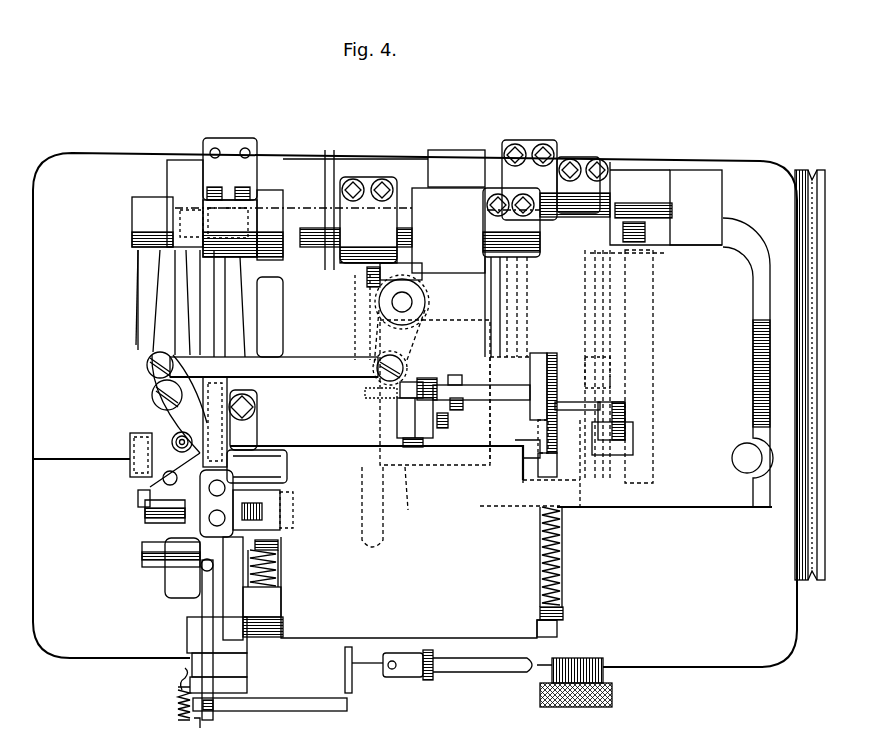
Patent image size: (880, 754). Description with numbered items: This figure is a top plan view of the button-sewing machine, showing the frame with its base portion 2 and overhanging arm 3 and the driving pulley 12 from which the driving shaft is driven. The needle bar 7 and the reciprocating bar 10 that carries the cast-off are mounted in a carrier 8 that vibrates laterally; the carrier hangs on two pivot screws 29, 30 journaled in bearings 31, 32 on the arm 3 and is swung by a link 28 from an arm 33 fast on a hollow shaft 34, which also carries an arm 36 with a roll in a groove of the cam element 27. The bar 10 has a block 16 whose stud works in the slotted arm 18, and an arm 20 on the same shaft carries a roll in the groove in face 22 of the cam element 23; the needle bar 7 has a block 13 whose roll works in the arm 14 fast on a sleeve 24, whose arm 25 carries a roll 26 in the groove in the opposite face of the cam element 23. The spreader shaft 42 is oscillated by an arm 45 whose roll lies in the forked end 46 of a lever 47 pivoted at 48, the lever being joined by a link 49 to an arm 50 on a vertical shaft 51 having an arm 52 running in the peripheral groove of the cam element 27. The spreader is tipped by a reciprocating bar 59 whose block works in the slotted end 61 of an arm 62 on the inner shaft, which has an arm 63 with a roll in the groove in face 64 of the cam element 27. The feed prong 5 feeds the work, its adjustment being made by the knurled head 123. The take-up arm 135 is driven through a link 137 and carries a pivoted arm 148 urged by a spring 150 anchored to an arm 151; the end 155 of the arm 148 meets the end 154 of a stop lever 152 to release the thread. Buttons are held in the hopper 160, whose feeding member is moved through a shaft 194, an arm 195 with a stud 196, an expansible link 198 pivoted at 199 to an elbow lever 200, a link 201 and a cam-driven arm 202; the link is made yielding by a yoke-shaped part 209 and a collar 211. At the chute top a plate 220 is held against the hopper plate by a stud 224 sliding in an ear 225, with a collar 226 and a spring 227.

The base portion 2 is at (722, 660).
The overhanging head or arm 3 is at (305, 272).
The feed prong 5 is at (117, 735).
The needle bar 7 is at (226, 489).
The carrier 8 is at (142, 470).
The reciprocating bar 10 is at (180, 532).
The driving pulley 12 is at (793, 536).
The block 13 is at (260, 465).
The arm 14 is at (245, 300).
The block 16 is at (233, 530).
The arm 18 is at (193, 299).
The arm 20 is at (630, 253).
The cam face 22 is at (583, 470).
The cam element 23 is at (580, 507).
The sleeve 24 is at (362, 175).
The arm 25 is at (515, 258).
The roll 26 is at (520, 360).
The cam element 27 is at (397, 507).
The link 28 is at (215, 277).
The pivot screw 29 is at (167, 502).
The pivot screw 30 is at (285, 503).
The bearing 31 is at (163, 523).
The bearing 32 is at (280, 521).
The arm 33 is at (218, 222).
The hollow shaft 34 is at (405, 207).
The arm 36 is at (360, 297).
The vertically-reciprocating shaft 42 is at (165, 481).
The arm 45 is at (213, 452).
The forked end 46 is at (167, 432).
The lever 47 is at (153, 385).
The pivot 48 is at (162, 392).
The link 49 is at (316, 366).
The arm 50 is at (400, 360).
The vertically-extending shaft 51 is at (406, 303).
The arm 52 is at (424, 324).
The reciprocating bar 59 is at (130, 458).
The slotted end 61 is at (130, 447).
The arm 62 is at (140, 327).
The arm 63 is at (500, 265).
The cam face 64 is at (487, 466).
The knurled head 123 is at (612, 698).
The take-up arm 135 is at (207, 600).
The link 137 is at (185, 553).
The arm 148 is at (193, 630).
The spring 150 is at (178, 692).
The arm 151 is at (182, 674).
The stop lever 152 is at (253, 702).
The end of stop lever 154 is at (205, 704).
The end of arm 155 is at (197, 722).
The hopper 160 is at (400, 613).
The shaft 194 is at (438, 438).
The arm 195 is at (405, 403).
The stud 196 is at (427, 382).
The link 198 is at (367, 392).
The pivot 199 is at (548, 362).
The elbow lever 200 is at (574, 397).
The link 201 is at (633, 430).
The arm 202 is at (648, 228).
The yoke-shaped part 209 is at (477, 385).
The collar 211 is at (465, 403).
The plate 220 is at (522, 456).
The stud 224 is at (277, 580).
The ear 225 is at (265, 602).
The collar 226 is at (277, 545).
The spring 227 is at (277, 565).